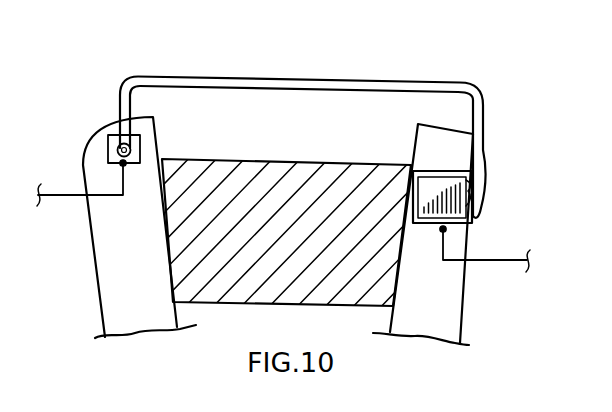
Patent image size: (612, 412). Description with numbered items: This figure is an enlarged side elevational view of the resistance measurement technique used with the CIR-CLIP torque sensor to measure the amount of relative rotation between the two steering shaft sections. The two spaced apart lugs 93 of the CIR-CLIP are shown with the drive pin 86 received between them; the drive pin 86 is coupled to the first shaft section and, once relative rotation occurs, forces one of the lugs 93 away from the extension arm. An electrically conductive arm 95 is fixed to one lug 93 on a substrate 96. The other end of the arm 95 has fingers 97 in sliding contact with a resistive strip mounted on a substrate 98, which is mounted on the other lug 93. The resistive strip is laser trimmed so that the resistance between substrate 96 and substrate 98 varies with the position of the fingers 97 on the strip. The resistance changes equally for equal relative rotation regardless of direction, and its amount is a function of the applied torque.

The drive pin 86 is at (267, 171).
The lugs 93 is at (111, 258).
The electrically conductive arm 95 is at (309, 89).
The substrate 96 is at (108, 142).
The fingers 97 is at (486, 184).
The substrate 98 is at (428, 230).